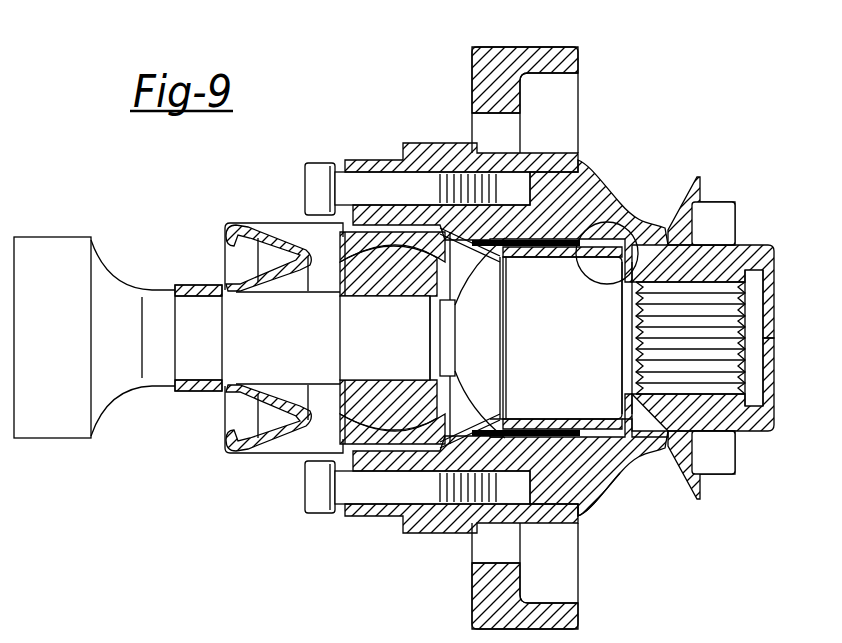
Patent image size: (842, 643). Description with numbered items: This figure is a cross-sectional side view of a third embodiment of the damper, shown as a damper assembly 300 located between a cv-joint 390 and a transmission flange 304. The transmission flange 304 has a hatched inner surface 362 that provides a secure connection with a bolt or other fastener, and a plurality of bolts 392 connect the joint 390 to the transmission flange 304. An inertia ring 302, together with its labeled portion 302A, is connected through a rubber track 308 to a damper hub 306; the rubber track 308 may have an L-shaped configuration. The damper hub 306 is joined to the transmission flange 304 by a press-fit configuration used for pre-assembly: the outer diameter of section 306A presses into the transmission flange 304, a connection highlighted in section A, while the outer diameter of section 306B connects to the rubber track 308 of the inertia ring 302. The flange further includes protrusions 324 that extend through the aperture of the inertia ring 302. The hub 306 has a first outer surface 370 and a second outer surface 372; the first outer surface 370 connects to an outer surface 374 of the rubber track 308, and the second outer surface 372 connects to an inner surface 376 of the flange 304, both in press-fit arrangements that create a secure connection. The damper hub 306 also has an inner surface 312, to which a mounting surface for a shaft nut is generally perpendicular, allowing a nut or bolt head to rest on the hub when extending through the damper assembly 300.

The damper assembly 300 is at (213, 418).
The inertia ring 302 is at (518, 50).
The housing portion 302A is at (584, 176).
The transmission flange 304 is at (650, 456).
The damper hub 306 is at (642, 286).
The section 306A is at (610, 420).
The section 306B is at (530, 424).
The rubber track 308 is at (562, 240).
The inner surface 312 is at (577, 340).
The protrusions 324 is at (448, 144).
The hatched inner surface 362 is at (732, 322).
The first outer surface 370 is at (548, 232).
The second outer surface 372 is at (605, 432).
The outer surface 374 is at (482, 302).
The inner surface 376 is at (613, 442).
The cv-joint 390 is at (210, 342).
The bolts 392 is at (393, 498).
The highlighted section A is at (600, 228).